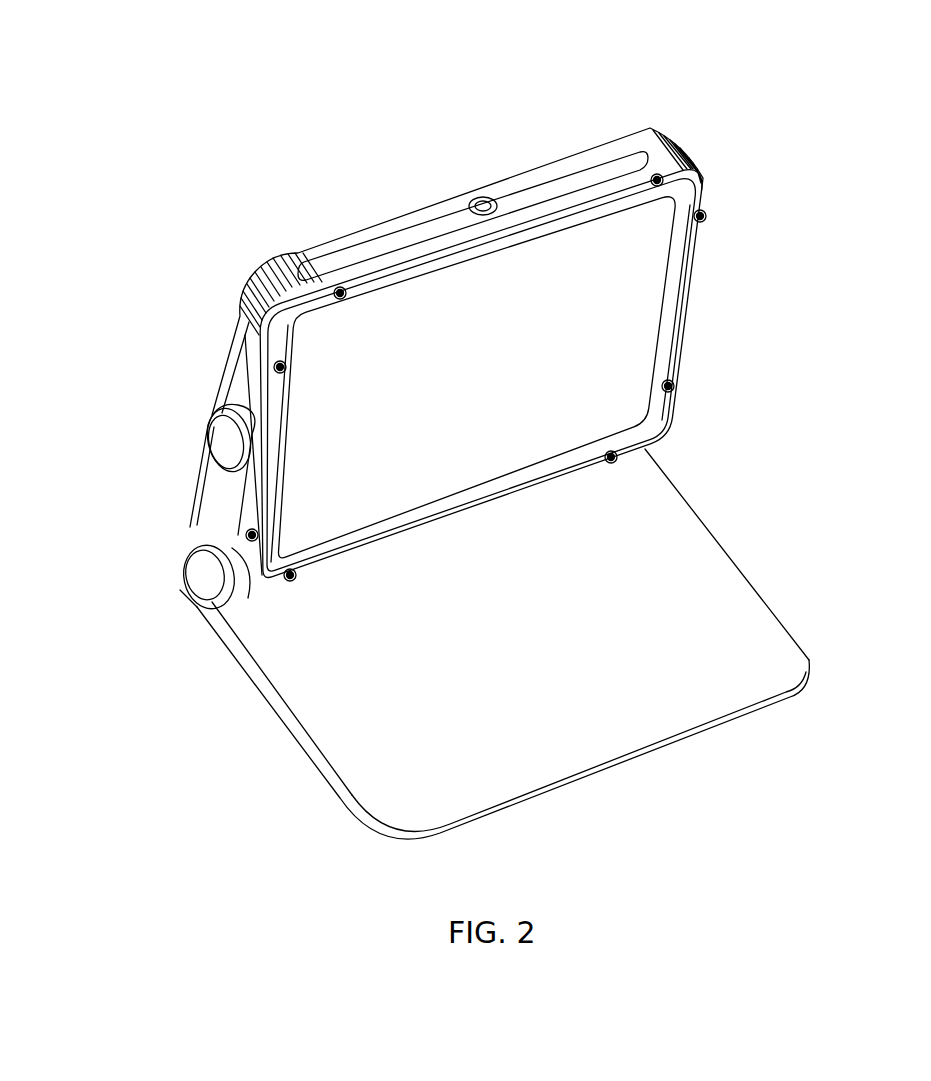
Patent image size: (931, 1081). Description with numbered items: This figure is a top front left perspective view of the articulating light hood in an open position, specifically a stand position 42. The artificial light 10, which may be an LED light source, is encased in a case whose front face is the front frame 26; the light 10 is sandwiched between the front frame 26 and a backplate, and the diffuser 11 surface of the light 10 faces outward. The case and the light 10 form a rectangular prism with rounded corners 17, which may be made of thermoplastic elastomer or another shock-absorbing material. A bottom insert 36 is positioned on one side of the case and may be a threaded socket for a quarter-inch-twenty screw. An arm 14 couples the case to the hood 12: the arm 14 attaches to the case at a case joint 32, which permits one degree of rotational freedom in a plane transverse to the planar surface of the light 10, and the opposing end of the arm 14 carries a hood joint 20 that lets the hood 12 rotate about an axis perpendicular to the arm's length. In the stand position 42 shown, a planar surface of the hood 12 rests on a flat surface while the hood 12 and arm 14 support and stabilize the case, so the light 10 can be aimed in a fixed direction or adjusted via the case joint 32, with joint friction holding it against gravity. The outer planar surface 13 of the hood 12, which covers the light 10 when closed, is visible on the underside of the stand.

The artificial light 10 is at (452, 296).
The diffuser 11 is at (420, 345).
The hood 12 is at (439, 644).
The outer planar surface 13 is at (713, 761).
The arm 14 is at (156, 424).
The rounded corners 17 is at (657, 128).
The hood joint 20 is at (203, 568).
The front frame 26 is at (690, 257).
The case joint 32 is at (212, 424).
The bottom insert 36 is at (468, 205).
The stand position 42 is at (221, 677).